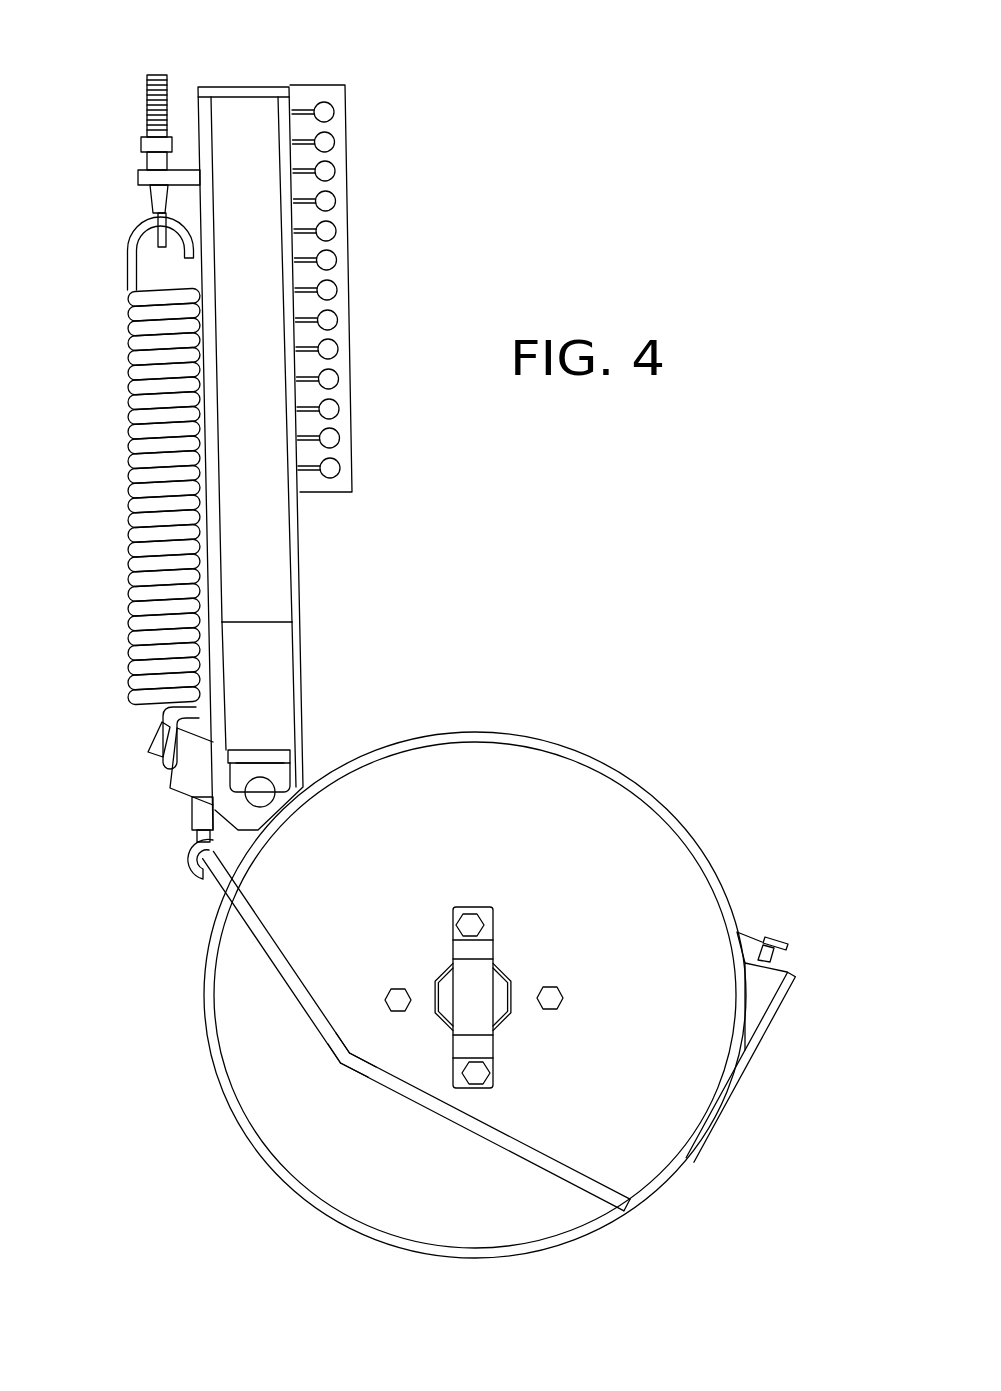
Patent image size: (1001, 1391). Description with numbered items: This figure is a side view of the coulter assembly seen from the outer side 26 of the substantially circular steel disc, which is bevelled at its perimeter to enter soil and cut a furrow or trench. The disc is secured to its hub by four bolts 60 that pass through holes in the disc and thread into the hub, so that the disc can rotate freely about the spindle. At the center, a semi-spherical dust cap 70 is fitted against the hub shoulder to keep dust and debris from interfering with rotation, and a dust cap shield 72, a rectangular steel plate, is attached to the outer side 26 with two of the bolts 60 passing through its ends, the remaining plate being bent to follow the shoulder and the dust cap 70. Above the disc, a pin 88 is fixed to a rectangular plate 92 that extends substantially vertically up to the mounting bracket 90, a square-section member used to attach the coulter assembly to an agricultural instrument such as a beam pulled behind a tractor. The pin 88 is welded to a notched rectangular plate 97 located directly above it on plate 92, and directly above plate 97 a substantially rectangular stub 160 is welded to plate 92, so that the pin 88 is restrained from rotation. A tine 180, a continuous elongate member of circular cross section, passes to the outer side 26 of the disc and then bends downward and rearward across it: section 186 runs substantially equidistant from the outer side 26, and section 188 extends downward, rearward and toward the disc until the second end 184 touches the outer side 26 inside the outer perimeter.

The outer side 26 is at (525, 822).
The bolts 60 is at (563, 998).
The dust cap 70 is at (498, 1005).
The dust cap shield 72 is at (470, 993).
The pin 88 is at (262, 795).
The mounting bracket 90 is at (253, 110).
The plate 92 is at (250, 642).
The plate 97 is at (273, 770).
The stub 160 is at (257, 750).
The tine 180 is at (366, 1074).
The second end 184 is at (618, 1202).
The section 186 is at (278, 962).
The section 188 is at (515, 1148).